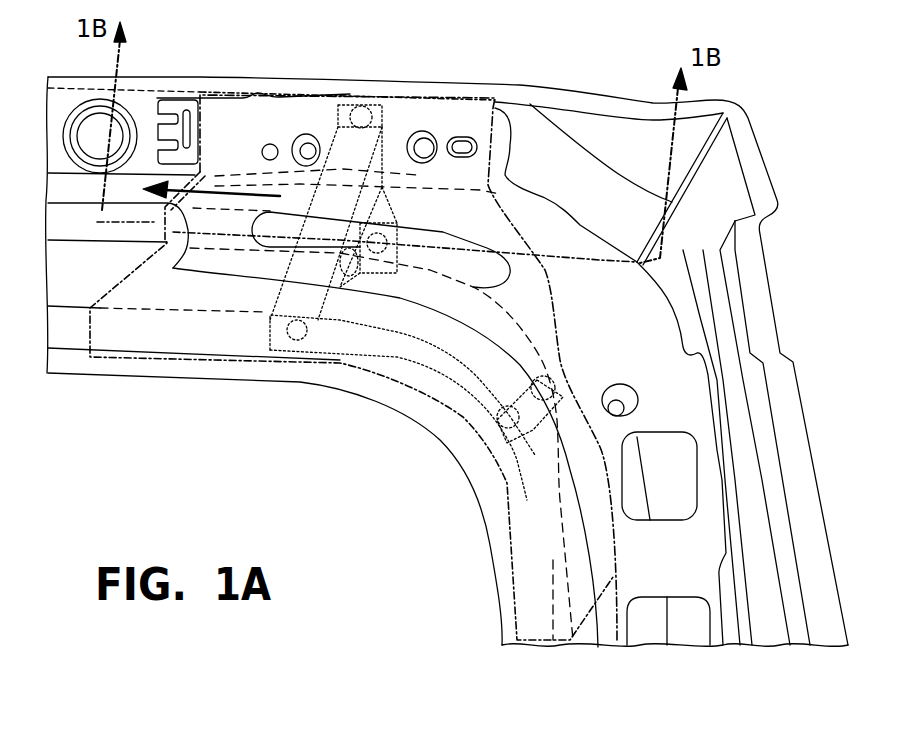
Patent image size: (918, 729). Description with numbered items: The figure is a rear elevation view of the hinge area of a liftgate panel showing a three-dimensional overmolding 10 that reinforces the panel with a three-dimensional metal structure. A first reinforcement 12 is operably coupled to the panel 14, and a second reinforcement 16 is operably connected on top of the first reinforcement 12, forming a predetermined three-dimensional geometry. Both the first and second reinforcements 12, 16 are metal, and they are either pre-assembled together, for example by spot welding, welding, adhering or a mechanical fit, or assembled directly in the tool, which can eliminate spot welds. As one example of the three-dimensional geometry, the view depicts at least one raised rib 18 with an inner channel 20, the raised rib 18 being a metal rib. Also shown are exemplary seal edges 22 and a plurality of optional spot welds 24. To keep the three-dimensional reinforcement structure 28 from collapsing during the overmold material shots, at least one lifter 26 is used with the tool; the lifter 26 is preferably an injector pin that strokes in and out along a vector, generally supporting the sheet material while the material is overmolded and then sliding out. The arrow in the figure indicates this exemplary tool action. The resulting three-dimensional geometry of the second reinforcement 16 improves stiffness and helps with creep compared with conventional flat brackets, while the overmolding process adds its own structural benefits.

The 3D overmolding 10 is at (209, 436).
The first reinforcement 12 is at (250, 88).
The panel 14 is at (587, 122).
The second reinforcement 16 is at (330, 142).
The raised rib 18 is at (370, 150).
The inner channel 20 is at (417, 176).
The seal edges 22 is at (558, 308).
The spot welds 24 is at (565, 379).
The lifter 26 is at (212, 195).
The 3D reinforcement structure 28 is at (443, 231).